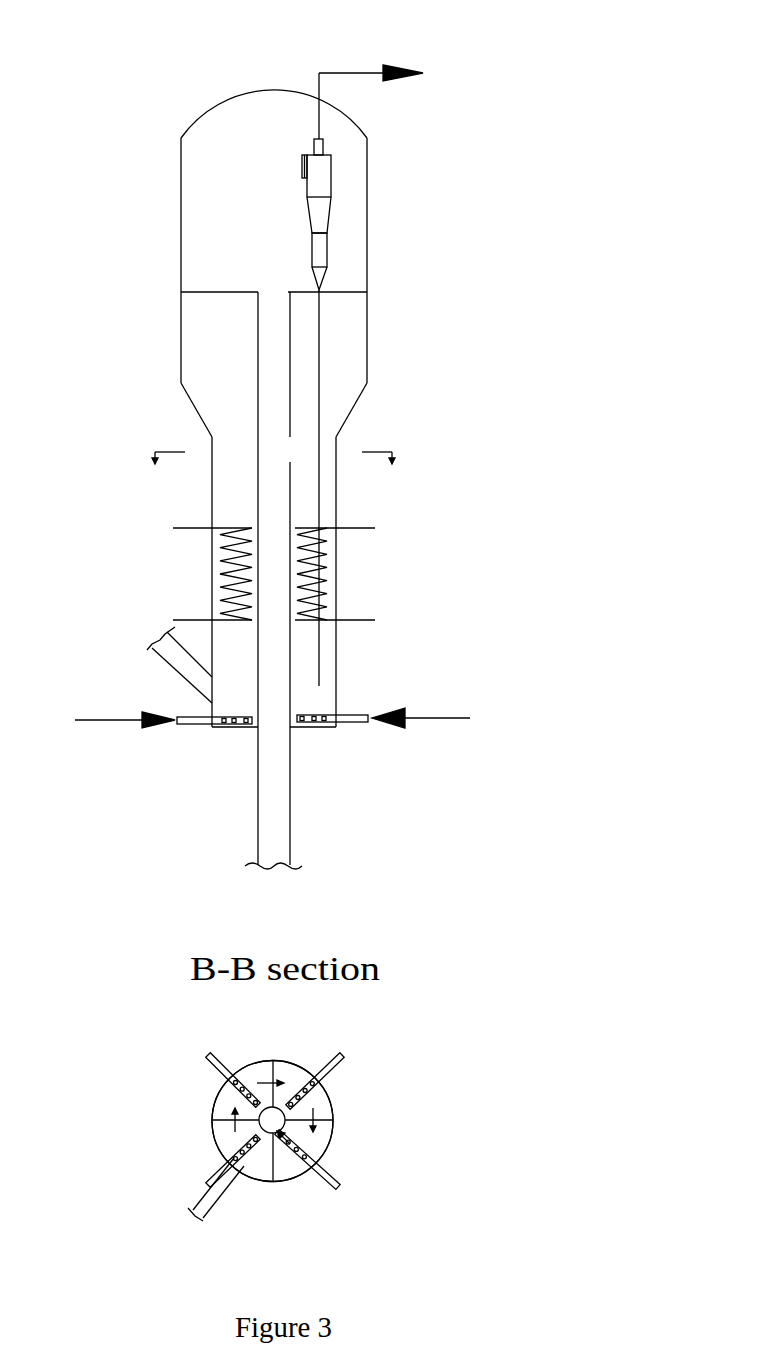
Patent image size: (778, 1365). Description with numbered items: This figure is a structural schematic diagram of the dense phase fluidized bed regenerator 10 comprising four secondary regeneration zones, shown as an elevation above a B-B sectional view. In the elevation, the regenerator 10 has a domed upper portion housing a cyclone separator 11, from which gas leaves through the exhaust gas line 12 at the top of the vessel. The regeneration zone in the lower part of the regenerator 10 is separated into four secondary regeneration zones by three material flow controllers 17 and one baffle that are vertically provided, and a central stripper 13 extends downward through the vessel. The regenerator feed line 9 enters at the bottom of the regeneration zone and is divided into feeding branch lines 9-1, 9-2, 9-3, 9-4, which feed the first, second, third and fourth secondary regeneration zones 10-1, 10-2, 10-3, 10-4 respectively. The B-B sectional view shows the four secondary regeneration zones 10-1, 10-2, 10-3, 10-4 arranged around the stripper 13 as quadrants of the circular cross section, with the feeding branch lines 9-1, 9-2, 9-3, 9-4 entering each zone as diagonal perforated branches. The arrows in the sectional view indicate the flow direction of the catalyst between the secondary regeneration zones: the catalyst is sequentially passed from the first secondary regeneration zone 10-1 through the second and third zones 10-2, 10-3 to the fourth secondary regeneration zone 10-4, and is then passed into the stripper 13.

The regenerator feed line 9 is at (95, 720).
The dense phase fluidized bed regenerator 10 is at (372, 318).
The cyclone separator 11 is at (332, 173).
The exhaust gas line 12 is at (333, 73).
The stripper 13 is at (290, 795).
The material flow controller 17 is at (230, 403).
The feeding branch line of 1st secondary regeneration zone 9-1 is at (215, 1177).
The feeding branch line of 2nd secondary regeneration zone 9-2 is at (205, 1055).
The feeding branch line of 3rd secondary regeneration zone 9-3 is at (344, 1053).
The feeding branch line of 4th secondary regeneration zone 9-4 is at (338, 1177).
The 1st secondary regeneration zone 10-1 is at (262, 1162).
The 2nd secondary regeneration zone 10-2 is at (230, 1100).
The 3rd secondary regeneration zone 10-3 is at (315, 1100).
The 4th secondary regeneration zone 10-4 is at (287, 1160).